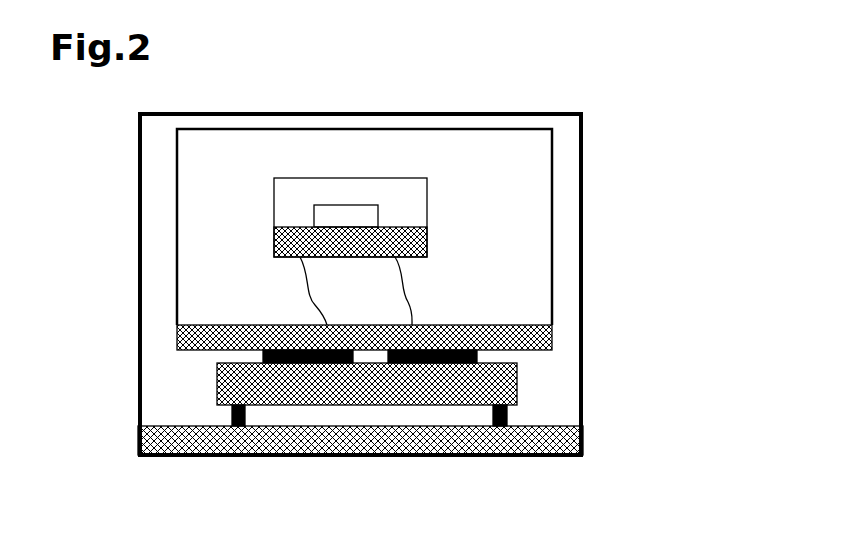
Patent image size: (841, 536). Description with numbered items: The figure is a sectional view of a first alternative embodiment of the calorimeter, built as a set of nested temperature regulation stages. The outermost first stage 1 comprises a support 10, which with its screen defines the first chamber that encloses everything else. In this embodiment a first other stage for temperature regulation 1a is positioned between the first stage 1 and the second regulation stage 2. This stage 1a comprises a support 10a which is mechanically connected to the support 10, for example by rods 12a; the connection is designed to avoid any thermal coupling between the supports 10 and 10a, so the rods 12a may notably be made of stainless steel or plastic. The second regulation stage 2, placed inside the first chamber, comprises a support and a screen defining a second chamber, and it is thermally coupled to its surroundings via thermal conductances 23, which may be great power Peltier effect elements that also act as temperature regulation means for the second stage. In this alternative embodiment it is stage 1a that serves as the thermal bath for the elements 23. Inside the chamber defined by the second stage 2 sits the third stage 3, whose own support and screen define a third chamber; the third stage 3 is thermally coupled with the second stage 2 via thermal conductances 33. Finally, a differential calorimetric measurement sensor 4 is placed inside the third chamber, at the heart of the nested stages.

The first stage 1 is at (601, 427).
The first other stage for temperature regulation 1a is at (523, 378).
The second regulation stage 2 is at (176, 275).
The third stage 3 is at (433, 232).
The differential calorimetric measurement sensor 4 is at (345, 217).
The support 10 is at (530, 450).
The support 10a is at (218, 406).
The rods 12a is at (240, 428).
The thermal conductances 23 is at (480, 360).
The thermal conductances 33 is at (410, 293).